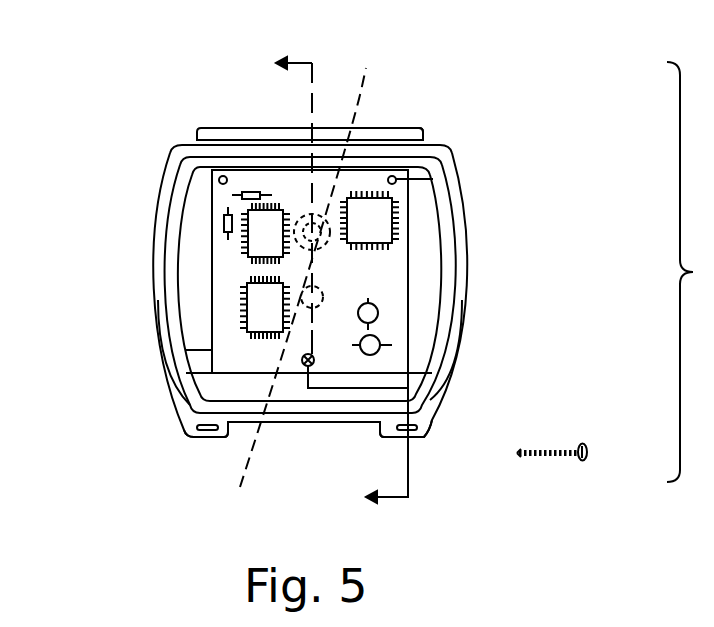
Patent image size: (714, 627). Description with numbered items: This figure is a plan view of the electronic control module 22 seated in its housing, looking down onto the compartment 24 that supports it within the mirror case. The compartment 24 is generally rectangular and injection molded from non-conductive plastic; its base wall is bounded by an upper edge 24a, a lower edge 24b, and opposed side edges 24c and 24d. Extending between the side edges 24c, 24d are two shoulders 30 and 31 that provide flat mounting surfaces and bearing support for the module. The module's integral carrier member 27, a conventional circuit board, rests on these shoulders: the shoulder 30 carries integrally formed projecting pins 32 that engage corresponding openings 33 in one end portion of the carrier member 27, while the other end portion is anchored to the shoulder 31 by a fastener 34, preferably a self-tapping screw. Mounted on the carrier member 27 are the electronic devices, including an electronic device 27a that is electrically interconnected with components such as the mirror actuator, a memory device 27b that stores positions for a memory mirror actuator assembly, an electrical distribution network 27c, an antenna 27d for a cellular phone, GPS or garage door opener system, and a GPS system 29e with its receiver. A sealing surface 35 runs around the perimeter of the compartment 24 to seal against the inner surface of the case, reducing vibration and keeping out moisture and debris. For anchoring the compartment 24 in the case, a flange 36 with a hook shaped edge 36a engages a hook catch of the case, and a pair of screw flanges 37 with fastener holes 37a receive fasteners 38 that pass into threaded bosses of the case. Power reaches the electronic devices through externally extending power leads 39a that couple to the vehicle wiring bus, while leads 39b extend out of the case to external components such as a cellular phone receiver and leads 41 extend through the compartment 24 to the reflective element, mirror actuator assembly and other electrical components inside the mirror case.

The electronic control module 22 is at (432, 262).
The compartment 24 is at (468, 100).
The upper edge 24a is at (184, 141).
The lower edge 24b is at (287, 422).
The side edge 24c is at (168, 374).
The side edge 24d is at (438, 272).
The integral carrier member 27 is at (374, 223).
The electronic device 27a is at (262, 233).
The memory device 27b is at (260, 307).
The electrical distribution network 27c is at (380, 342).
The antenna 27d is at (378, 313).
The GPS system 29e is at (433, 236).
The shoulder 30 is at (203, 188).
The shoulder 31 is at (202, 360).
The projecting pins 32 is at (433, 179).
The openings 33 is at (219, 180).
The fastener 34 is at (315, 366).
The sealing surface 35 is at (167, 292).
The flange 36 is at (442, 158).
The hook shaped edge 36a is at (398, 128).
The screw flanges 37 is at (185, 435).
The fastener holes 37a is at (407, 428).
The fasteners 38 is at (558, 447).
The power leads 39a is at (345, 145).
The leads 39b is at (375, 174).
The leads 41 is at (288, 285).